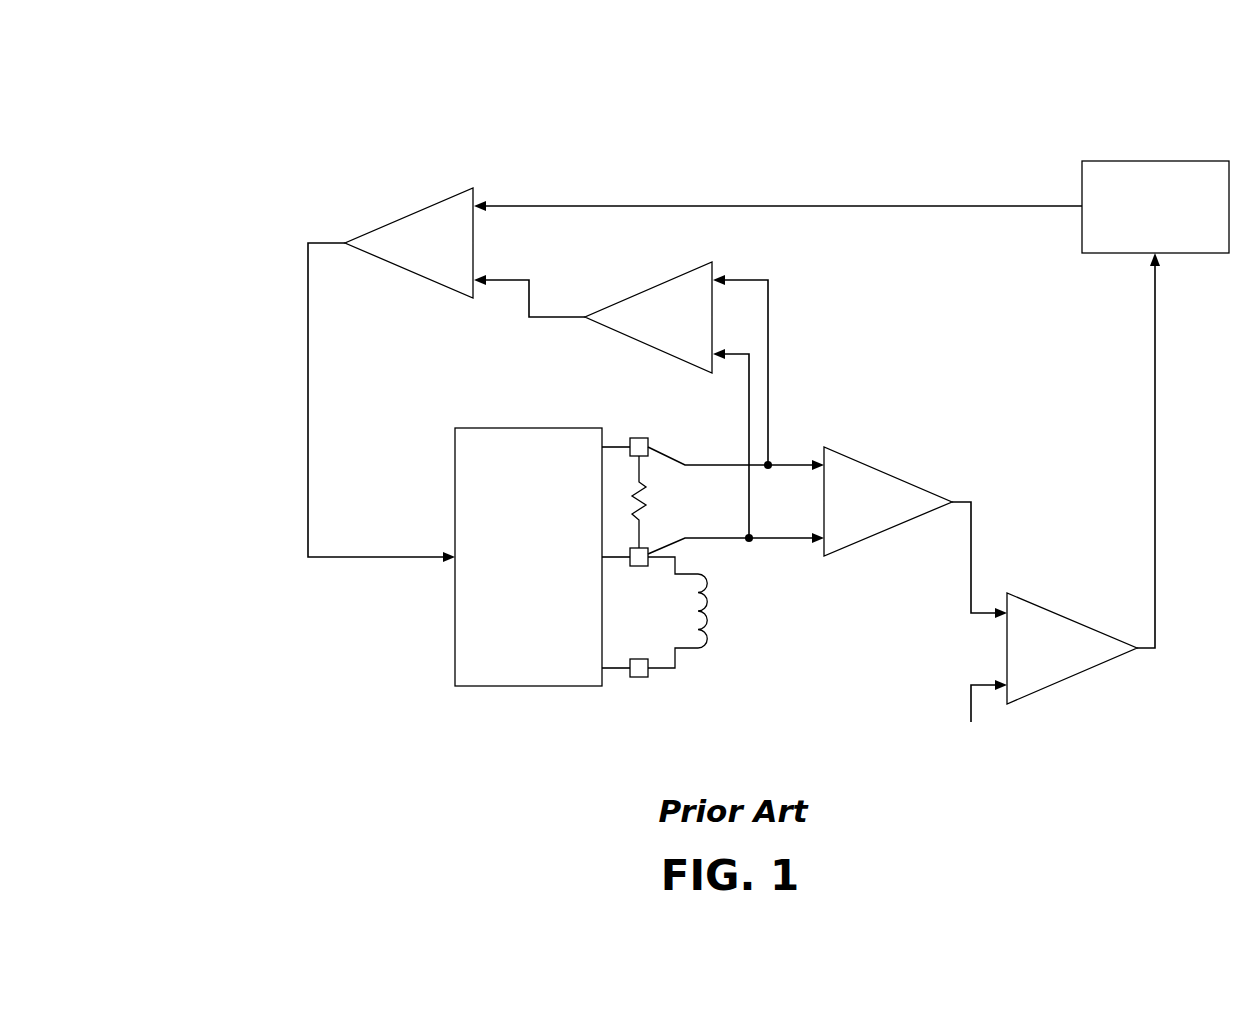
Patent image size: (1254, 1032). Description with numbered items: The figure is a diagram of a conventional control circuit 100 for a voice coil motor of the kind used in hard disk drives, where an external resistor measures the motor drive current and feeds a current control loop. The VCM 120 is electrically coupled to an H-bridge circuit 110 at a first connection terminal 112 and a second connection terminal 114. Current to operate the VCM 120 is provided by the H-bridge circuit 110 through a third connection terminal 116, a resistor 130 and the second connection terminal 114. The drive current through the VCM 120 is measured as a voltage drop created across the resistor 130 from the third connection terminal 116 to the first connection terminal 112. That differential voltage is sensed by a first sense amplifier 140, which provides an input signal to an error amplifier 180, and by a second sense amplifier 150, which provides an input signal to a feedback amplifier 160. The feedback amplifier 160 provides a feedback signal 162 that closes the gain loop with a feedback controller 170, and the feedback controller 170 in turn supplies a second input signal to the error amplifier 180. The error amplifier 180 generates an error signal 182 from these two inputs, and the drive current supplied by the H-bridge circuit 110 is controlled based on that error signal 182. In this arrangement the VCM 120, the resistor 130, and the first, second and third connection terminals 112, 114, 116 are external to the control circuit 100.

The control circuit 100 is at (216, 107).
The H-bridge circuit 110 is at (477, 428).
The first connection terminal 112 is at (639, 567).
The second connection terminal 114 is at (639, 678).
The third connection terminal 116 is at (635, 438).
The voice coil motor 120 is at (703, 615).
The resistor 130 is at (646, 495).
The first sense amplifier 140 is at (627, 298).
The second sense amplifier 150 is at (886, 474).
The feedback amplifier 160 is at (1073, 621).
The feedback signal 162 is at (1157, 466).
The feedback controller 170 is at (1118, 254).
The error amplifier 180 is at (410, 217).
The error signal 182 is at (308, 429).